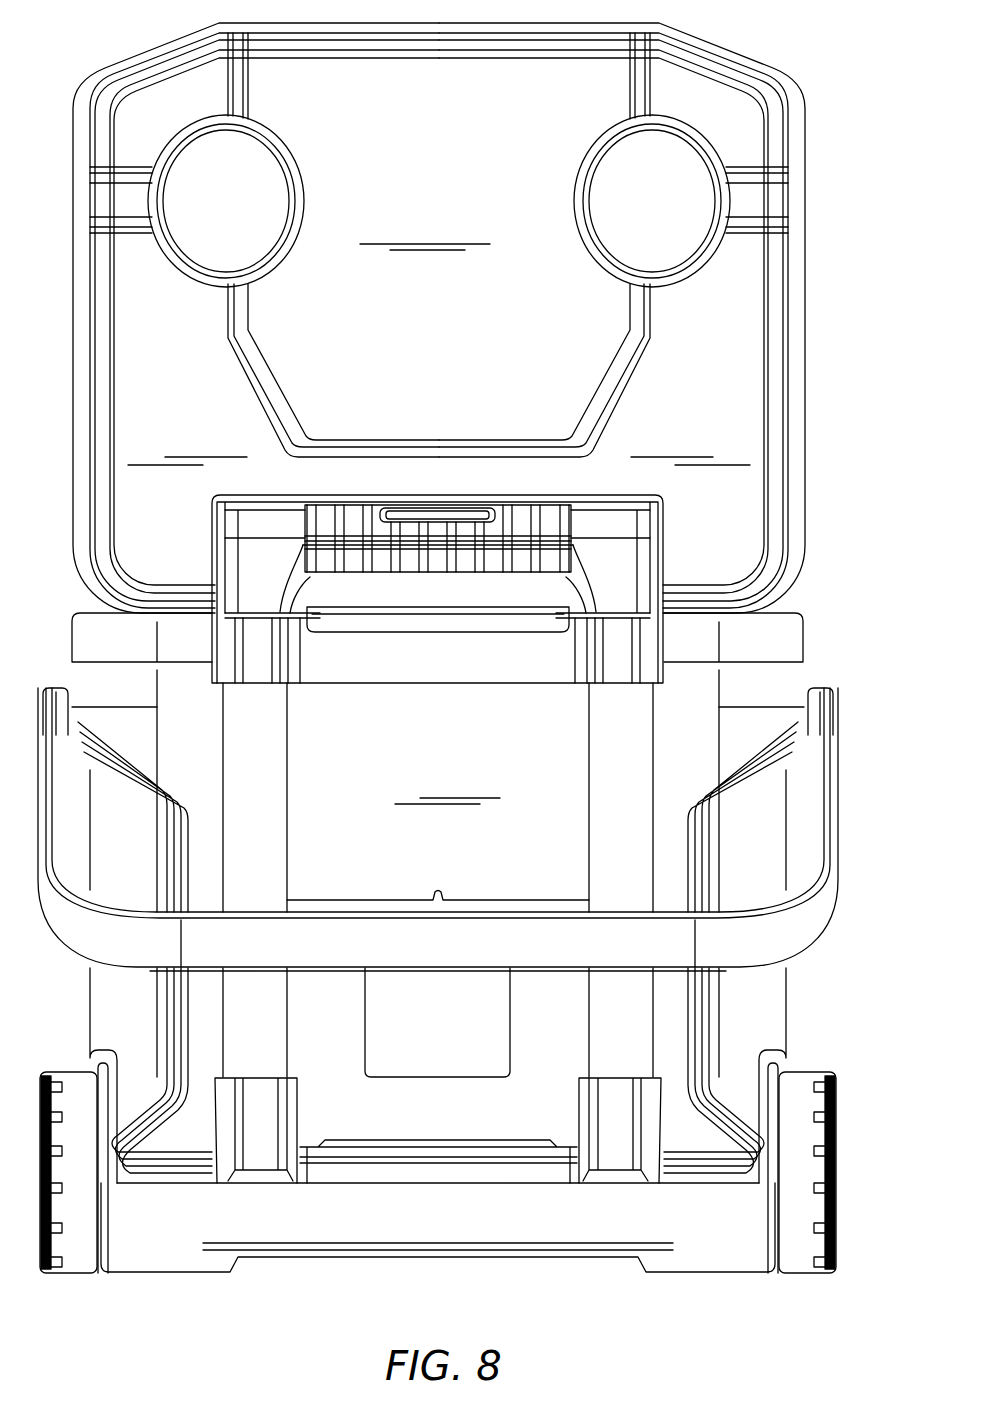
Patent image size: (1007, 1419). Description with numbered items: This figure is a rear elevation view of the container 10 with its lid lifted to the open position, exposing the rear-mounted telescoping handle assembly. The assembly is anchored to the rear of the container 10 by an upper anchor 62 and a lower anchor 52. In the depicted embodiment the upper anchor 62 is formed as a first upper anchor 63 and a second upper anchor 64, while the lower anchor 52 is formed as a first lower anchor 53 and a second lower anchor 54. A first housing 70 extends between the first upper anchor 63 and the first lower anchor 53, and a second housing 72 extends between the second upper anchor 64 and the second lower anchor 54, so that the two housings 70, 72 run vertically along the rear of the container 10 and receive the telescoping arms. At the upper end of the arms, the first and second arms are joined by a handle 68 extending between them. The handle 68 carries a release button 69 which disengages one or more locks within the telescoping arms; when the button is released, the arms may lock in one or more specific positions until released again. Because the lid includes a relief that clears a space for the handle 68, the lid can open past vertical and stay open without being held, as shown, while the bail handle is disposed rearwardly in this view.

The container 10 is at (491, 673).
The lower anchor 52 is at (398, 1195).
The first lower anchor 53 is at (258, 1155).
The second lower anchor 54 is at (610, 1148).
The upper anchor 62 is at (420, 660).
The first upper anchor 63 is at (217, 663).
The second upper anchor 64 is at (617, 647).
The handle 68 is at (418, 499).
The release button 69 is at (440, 508).
The first housing 70 is at (260, 782).
The second housing 72 is at (623, 841).